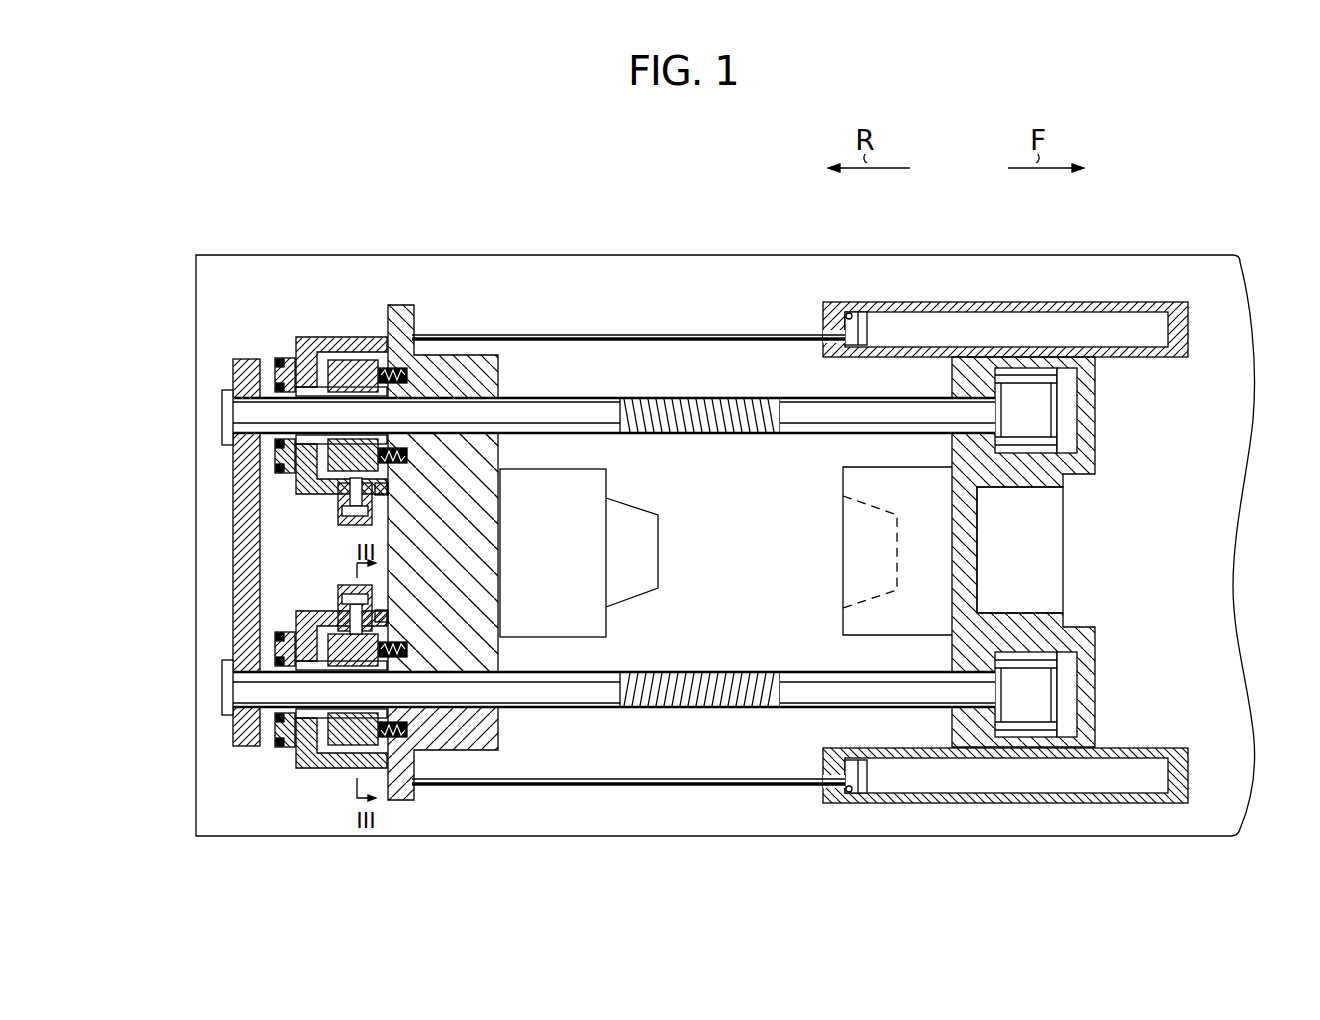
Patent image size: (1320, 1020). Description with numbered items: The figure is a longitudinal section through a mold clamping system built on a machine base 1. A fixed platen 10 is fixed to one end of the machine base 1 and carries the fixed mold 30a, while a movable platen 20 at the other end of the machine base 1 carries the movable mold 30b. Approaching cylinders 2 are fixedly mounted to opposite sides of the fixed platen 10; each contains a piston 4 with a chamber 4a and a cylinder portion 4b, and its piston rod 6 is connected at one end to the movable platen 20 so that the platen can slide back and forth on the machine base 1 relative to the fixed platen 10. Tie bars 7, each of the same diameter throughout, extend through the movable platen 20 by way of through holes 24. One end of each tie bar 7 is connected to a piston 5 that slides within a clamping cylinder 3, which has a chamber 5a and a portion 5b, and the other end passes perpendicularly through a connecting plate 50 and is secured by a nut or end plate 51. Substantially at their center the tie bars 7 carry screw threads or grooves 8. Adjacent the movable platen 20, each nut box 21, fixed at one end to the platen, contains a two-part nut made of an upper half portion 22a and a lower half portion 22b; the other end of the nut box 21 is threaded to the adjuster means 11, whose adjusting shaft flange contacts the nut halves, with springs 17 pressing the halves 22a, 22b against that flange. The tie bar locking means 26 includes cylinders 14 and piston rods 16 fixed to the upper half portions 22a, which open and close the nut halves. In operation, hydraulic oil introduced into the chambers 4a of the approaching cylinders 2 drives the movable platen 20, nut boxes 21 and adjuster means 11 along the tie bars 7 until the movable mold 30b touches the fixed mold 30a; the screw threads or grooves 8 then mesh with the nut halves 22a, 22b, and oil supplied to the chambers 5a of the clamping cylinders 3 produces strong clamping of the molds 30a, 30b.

The machine base 1 is at (1125, 260).
The approaching cylinder 2 is at (1138, 329).
The clamping cylinder 3 is at (1063, 424).
The piston 4 is at (884, 332).
The chamber 4a is at (849, 313).
The cylinder tube 4b is at (958, 322).
The piston 5 is at (1023, 376).
The chamber 5a is at (997, 438).
The bearing retainer 5b is at (1070, 395).
The piston rod 6 is at (690, 334).
The tie bar 7 is at (812, 396).
The screw threads or grooves 8 is at (665, 397).
The fixed platen 10 is at (1013, 474).
The adjuster means 11 is at (289, 490).
The cylinder 14 is at (338, 500).
The piston rod 16 is at (338, 500).
The spring 17 is at (406, 374).
The movable platen 20 is at (458, 356).
The nut box 21 is at (317, 337).
The upper half portion 22a is at (283, 485).
The lower half portion 22b is at (352, 359).
The through hole 24 is at (482, 407).
The tie bar locking means 26 is at (331, 518).
The fixed mold 30a is at (855, 583).
The movable mold 30b is at (638, 518).
The connecting plate 50 is at (247, 358).
The nut or end plate 51 is at (222, 412).